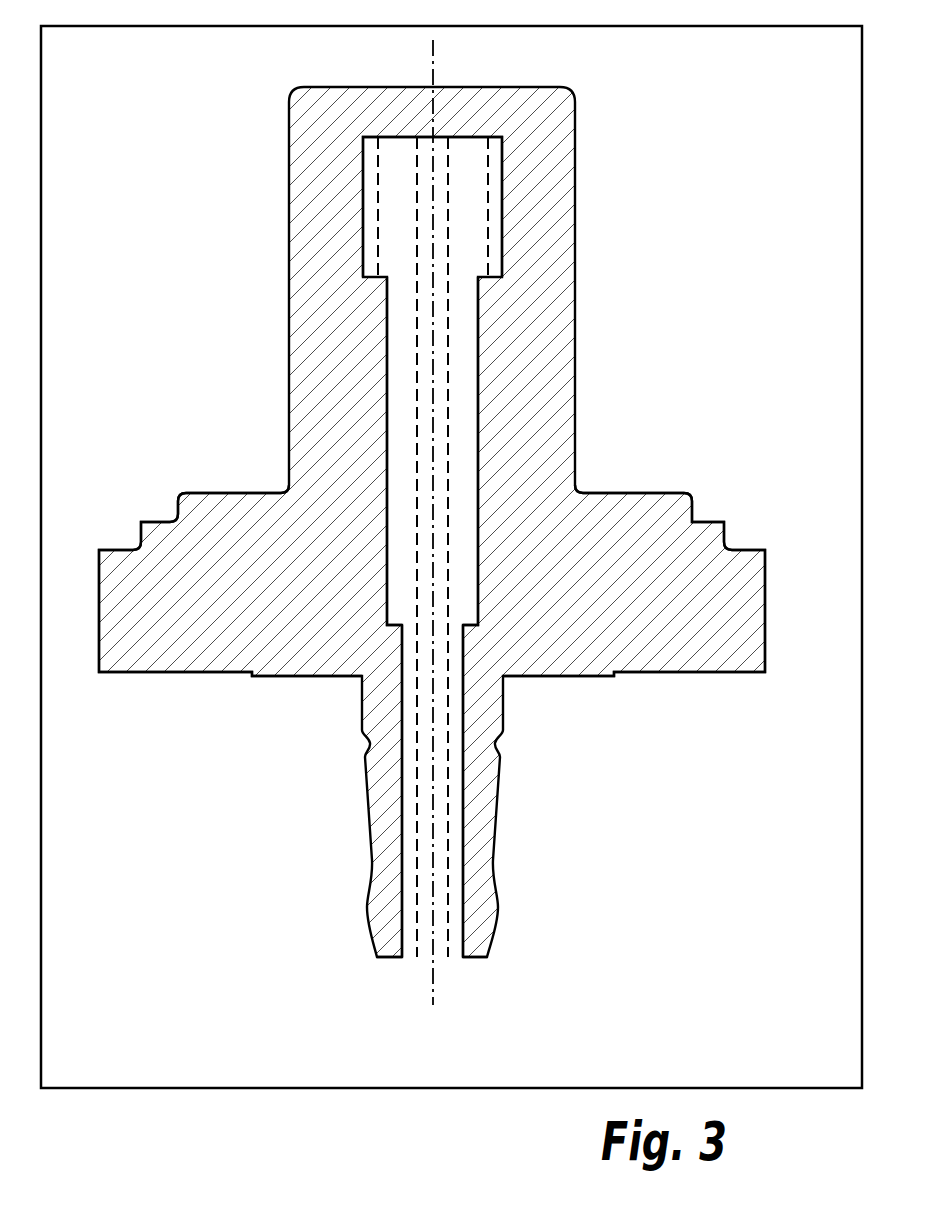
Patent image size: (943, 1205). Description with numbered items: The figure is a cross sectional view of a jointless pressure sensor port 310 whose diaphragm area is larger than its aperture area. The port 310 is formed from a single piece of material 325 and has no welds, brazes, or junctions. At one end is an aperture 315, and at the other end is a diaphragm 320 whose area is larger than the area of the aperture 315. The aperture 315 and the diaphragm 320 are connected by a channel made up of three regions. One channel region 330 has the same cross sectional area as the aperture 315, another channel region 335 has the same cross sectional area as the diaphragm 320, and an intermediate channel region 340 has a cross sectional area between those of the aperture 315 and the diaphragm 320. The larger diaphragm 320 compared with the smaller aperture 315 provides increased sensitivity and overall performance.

The jointless pressure sensor port 310 is at (633, 1034).
The aperture 315 is at (433, 958).
The diaphragm 320 is at (433, 139).
The single piece of material 325 is at (575, 643).
The channel region 330 is at (432, 800).
The channel region 335 is at (433, 214).
The intermediate channel region 340 is at (433, 447).